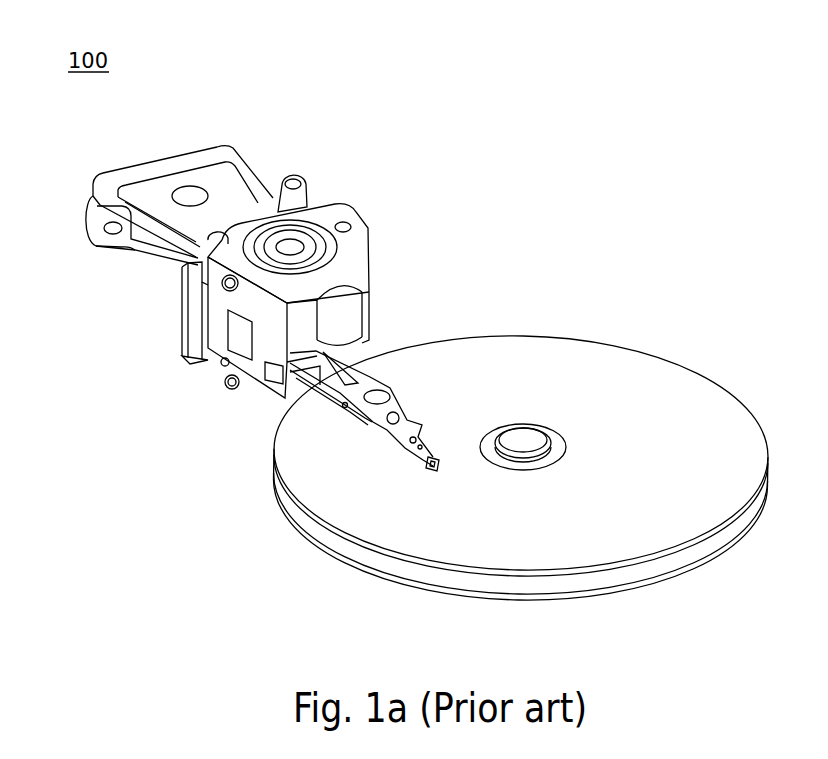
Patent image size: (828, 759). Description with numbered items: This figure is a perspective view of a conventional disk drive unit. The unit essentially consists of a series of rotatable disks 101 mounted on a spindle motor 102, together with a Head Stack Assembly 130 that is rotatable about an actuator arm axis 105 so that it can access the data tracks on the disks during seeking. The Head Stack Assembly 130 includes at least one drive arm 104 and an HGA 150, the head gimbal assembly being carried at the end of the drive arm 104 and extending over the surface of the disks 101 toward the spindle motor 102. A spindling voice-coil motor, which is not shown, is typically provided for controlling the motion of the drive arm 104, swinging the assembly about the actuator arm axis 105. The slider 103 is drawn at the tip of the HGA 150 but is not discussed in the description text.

The rotatable disks 101 is at (647, 430).
The spindle motor 102 is at (527, 440).
The slider 103 is at (436, 458).
The drive arm 104 is at (374, 377).
The actuator arm axis 105 is at (296, 240).
The Head Stack Assembly (HSA) 130 is at (357, 282).
The HGA 150 is at (407, 422).